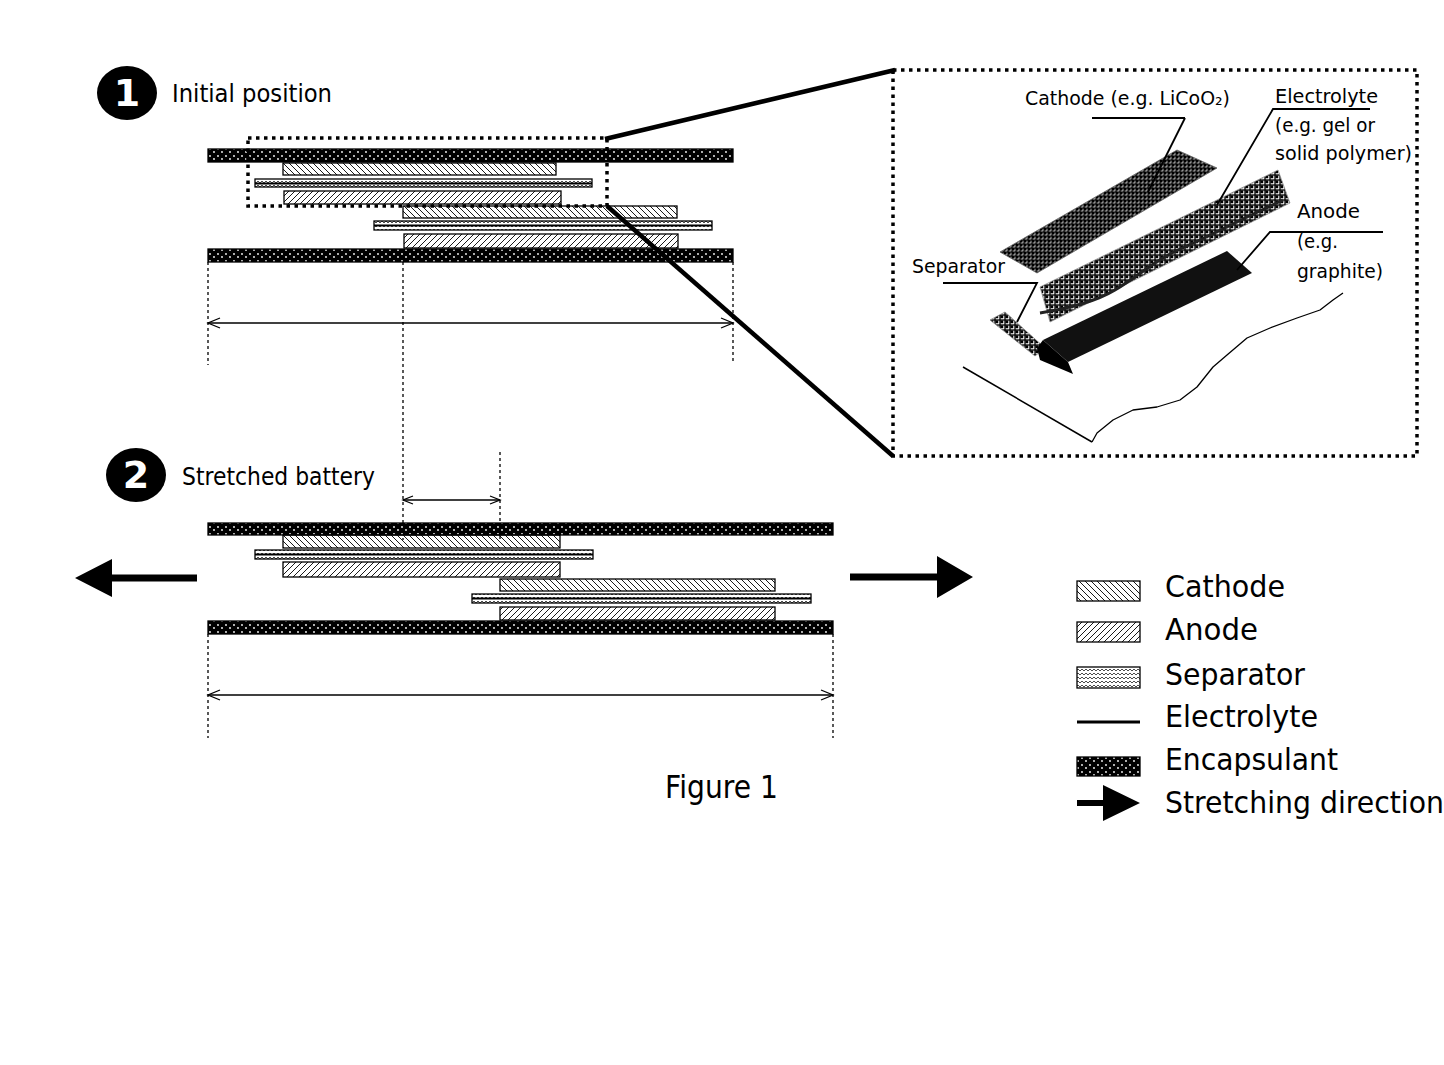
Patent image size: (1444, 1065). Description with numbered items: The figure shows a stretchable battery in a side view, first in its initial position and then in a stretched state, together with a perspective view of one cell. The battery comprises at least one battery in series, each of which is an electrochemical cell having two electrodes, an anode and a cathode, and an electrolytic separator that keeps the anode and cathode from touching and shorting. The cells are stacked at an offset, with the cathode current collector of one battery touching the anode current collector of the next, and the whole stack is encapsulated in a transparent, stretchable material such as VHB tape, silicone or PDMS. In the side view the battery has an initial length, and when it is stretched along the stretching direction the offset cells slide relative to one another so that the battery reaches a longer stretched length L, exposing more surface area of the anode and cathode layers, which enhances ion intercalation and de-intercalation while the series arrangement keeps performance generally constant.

The stretched battery length L is at (520, 680).